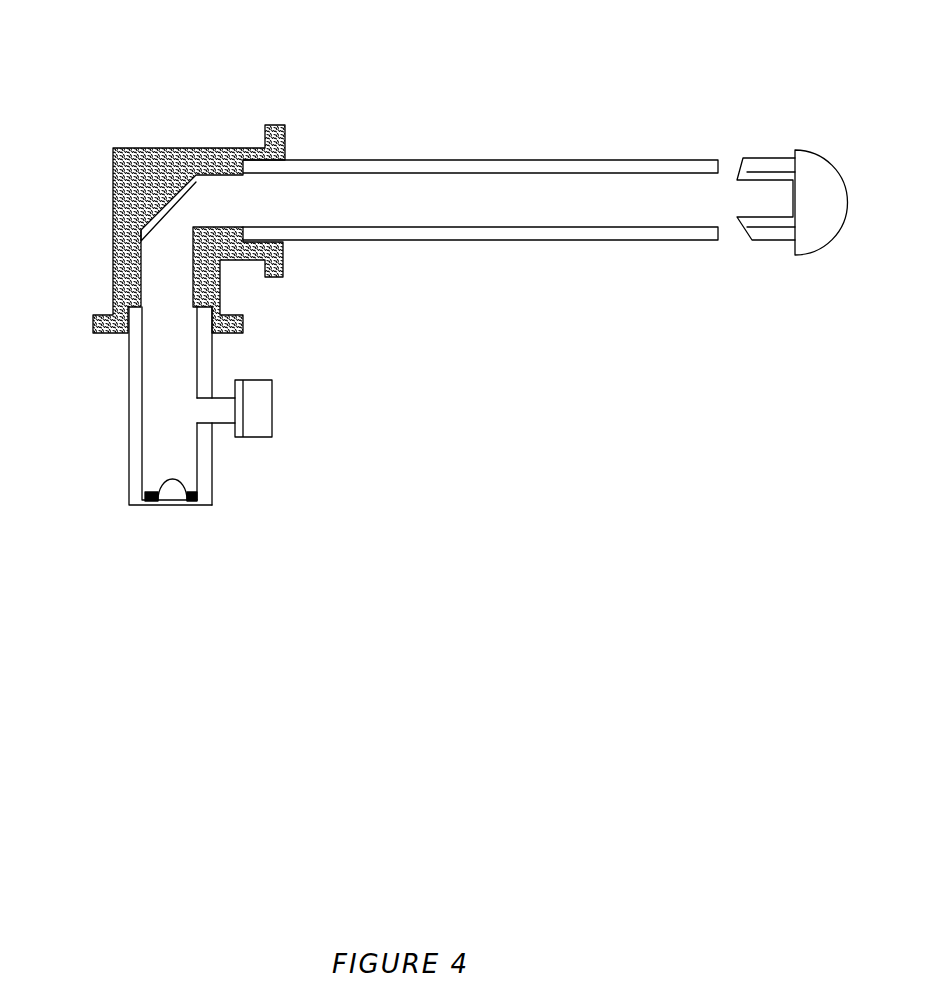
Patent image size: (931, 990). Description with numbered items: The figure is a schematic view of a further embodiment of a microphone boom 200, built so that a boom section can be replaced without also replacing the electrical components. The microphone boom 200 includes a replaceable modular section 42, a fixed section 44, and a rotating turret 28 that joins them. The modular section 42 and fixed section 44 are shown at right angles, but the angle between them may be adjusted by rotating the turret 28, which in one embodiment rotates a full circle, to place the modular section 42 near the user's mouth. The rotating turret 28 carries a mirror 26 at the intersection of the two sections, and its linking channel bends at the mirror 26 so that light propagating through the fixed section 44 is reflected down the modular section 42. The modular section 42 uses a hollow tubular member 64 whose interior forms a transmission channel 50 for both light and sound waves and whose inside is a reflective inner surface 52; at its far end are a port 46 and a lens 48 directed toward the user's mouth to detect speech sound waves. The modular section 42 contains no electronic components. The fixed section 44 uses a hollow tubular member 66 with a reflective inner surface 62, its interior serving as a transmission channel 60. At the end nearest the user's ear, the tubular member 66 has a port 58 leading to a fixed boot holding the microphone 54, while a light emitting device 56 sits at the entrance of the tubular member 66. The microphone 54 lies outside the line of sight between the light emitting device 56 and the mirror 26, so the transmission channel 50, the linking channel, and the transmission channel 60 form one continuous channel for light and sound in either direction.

The microphone boom 200 is at (440, 35).
The rotating turret 28 is at (156, 132).
The mirror 26 is at (199, 202).
The hollow tubular member 64 is at (462, 158).
The transmission channel 50 is at (492, 217).
The reflective inner surface 52 is at (588, 173).
The port 46 is at (731, 158).
The lens 48 is at (821, 202).
The modular section 42 is at (645, 290).
The fixed section 44 is at (83, 433).
The transmission channel 60 is at (178, 308).
The reflective inner surface 62 is at (142, 338).
The hollow tubular member 66 is at (210, 358).
The port 58 is at (197, 417).
The microphone 54 is at (260, 408).
The light emitting device 56 is at (172, 497).